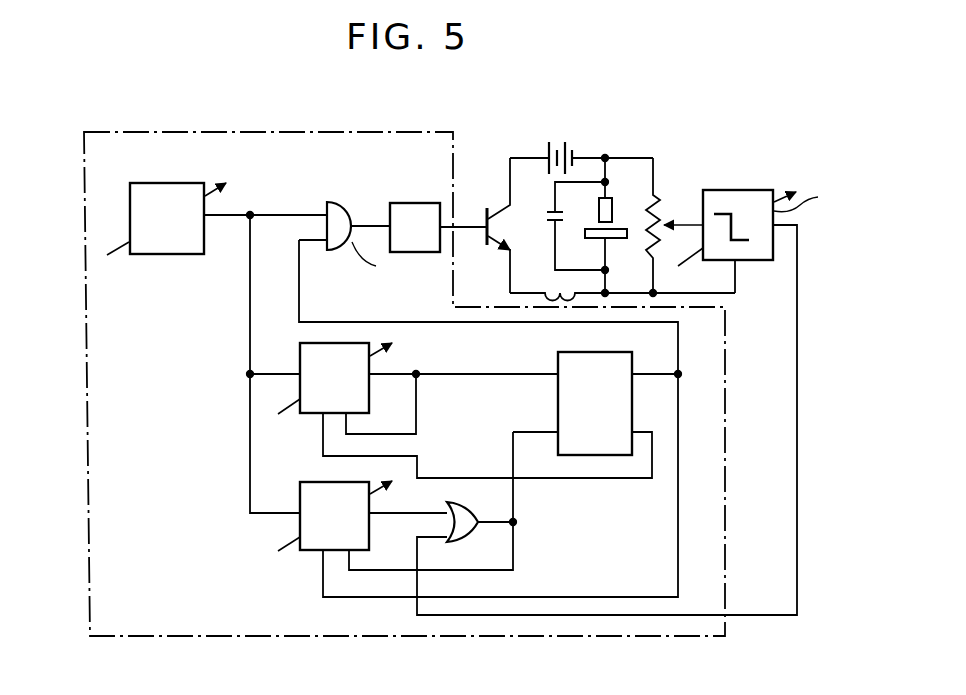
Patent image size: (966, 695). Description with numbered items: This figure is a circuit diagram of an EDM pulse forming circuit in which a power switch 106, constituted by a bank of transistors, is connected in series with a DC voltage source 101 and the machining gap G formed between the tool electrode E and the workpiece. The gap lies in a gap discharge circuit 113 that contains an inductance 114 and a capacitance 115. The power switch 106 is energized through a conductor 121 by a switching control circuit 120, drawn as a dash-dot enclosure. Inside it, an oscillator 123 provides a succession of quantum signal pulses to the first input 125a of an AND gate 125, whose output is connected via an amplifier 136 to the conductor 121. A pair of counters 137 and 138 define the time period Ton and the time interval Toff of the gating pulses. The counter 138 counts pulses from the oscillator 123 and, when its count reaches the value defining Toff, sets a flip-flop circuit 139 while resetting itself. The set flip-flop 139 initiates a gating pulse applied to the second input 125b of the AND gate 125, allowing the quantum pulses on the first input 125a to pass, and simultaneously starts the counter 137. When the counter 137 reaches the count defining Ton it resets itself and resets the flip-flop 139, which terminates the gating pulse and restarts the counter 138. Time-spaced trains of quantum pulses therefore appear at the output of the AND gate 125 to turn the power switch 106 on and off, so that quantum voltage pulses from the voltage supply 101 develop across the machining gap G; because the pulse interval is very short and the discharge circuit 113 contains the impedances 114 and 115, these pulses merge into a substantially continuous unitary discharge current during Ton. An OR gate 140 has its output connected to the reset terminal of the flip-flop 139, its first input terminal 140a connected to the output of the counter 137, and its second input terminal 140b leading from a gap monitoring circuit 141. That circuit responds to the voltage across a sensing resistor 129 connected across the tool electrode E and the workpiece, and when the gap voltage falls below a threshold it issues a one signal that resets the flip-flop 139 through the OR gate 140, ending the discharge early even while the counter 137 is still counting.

The switching control circuit 120 is at (238, 131).
The oscillator 123 is at (190, 183).
The AND gate 125 is at (338, 202).
The first input of AND gate 125a is at (305, 212).
The second input of AND gate 125b is at (306, 243).
The amplifier 136 is at (400, 203).
The power switch 106 is at (500, 212).
The conductor 121 is at (476, 235).
The DC voltage source 101 is at (552, 138).
The gap discharge circuit 113 is at (591, 160).
The capacitance 115 is at (545, 218).
The tool electrode E is at (600, 216).
The machining gap G is at (614, 231).
The inductance 114 is at (548, 292).
The sensing resistor 129 is at (660, 200).
The gap monitoring circuit 141 is at (753, 188).
The counter 138 is at (300, 352).
The flip-flop circuit 139 is at (590, 352).
The counter 137 is at (300, 490).
The OR gate 140 is at (482, 512).
The first input terminal of OR gate 140a is at (427, 510).
The second input terminal of OR gate 140b is at (427, 540).